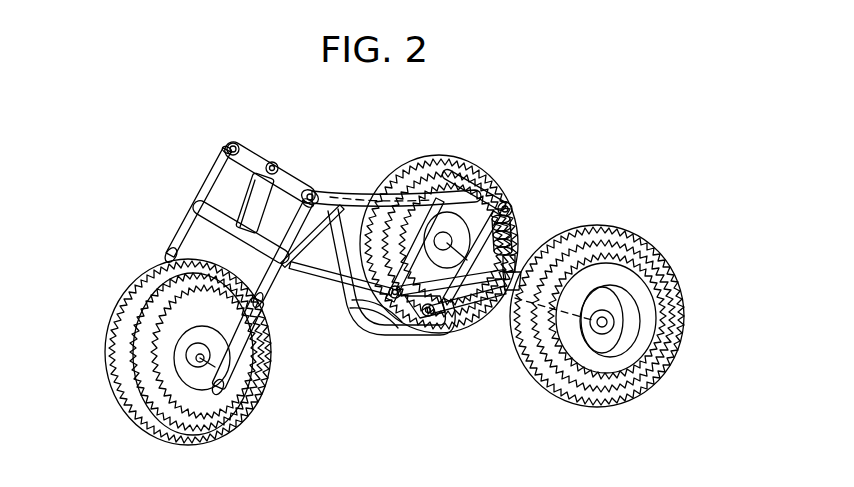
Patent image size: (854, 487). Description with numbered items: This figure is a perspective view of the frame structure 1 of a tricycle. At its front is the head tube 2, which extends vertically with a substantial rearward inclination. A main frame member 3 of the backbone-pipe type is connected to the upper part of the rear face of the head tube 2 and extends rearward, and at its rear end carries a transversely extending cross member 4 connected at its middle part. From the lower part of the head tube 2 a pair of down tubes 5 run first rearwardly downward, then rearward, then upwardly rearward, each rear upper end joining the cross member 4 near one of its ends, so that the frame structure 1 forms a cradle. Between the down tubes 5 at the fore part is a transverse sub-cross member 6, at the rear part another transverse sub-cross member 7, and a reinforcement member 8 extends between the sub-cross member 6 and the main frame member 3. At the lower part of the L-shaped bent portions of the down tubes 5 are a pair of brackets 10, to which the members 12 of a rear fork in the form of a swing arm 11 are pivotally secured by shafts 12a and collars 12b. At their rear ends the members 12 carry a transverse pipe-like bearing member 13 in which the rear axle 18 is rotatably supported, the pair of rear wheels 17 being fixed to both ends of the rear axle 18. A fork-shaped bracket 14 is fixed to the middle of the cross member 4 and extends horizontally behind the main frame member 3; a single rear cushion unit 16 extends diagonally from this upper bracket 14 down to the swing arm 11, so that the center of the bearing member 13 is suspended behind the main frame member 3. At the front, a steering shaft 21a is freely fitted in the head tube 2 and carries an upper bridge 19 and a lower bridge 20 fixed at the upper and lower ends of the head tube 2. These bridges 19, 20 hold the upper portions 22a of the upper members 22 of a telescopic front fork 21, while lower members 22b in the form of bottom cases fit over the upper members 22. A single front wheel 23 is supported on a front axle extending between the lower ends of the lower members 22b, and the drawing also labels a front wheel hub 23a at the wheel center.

The frame structure 1 is at (362, 185).
The head tube 2 is at (222, 152).
The main frame member 3 is at (323, 187).
The cross member 4 is at (448, 172).
The down tubes 5 is at (332, 305).
The sub-cross member 6 is at (270, 245).
The sub-cross member 7 is at (380, 318).
The reinforcement member 8 is at (338, 190).
The brackets 10 is at (360, 247).
The swing arm 11 is at (483, 305).
The members 12 is at (466, 300).
The shafts 12a is at (432, 316).
The collars 12b is at (392, 288).
The bearing member 13 is at (516, 273).
The bracket 14 is at (500, 196).
The rear cushion unit 16 is at (511, 204).
The rear wheels 17 is at (400, 160).
The rear axle 18 is at (537, 345).
The upper bridge 19 is at (238, 146).
The lower bridge 20 is at (217, 207).
The telescopic front fork 21 is at (217, 394).
The steering shaft 21a is at (270, 162).
The upper members 22 is at (187, 227).
The upper portions 22a is at (205, 170).
The lower members 22b is at (166, 257).
The front wheel 23 is at (112, 372).
The front wheel hub 23a is at (228, 383).